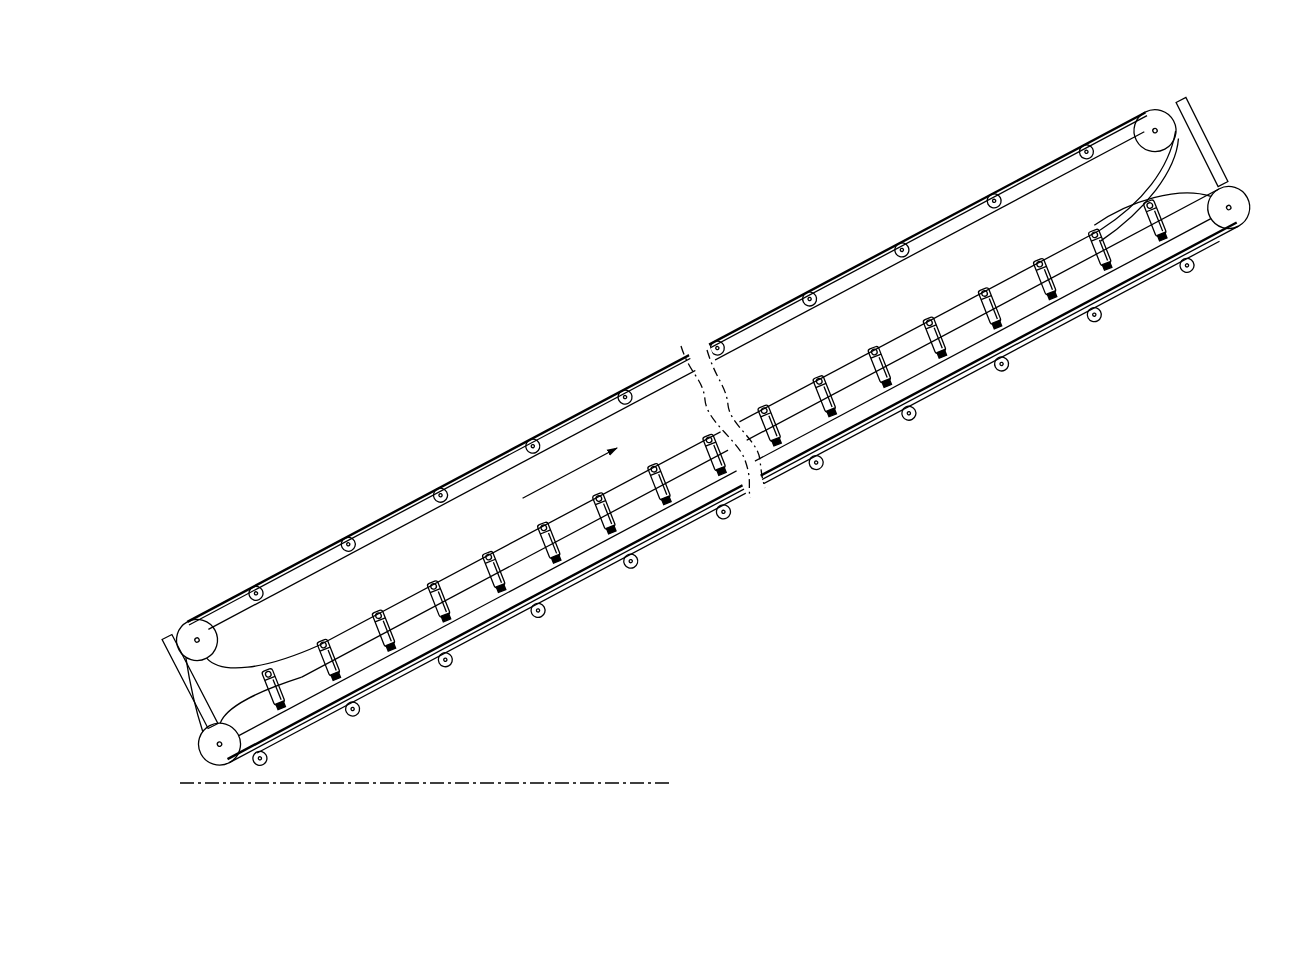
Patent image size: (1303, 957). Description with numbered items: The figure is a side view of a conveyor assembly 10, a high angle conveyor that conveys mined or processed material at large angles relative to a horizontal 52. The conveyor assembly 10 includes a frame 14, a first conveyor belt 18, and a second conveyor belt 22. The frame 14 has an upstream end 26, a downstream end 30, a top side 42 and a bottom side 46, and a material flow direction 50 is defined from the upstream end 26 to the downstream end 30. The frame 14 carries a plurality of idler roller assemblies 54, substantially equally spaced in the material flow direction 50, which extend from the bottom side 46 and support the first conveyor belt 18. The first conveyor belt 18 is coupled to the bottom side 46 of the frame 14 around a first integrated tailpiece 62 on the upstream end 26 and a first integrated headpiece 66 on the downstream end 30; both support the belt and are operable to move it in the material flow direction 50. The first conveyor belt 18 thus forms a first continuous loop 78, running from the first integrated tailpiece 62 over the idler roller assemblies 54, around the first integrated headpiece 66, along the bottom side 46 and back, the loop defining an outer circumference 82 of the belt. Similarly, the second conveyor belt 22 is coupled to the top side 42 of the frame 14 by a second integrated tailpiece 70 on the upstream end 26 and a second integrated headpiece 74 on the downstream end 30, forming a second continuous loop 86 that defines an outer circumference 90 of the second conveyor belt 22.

The conveyor assembly 10 is at (705, 453).
The frame 14 is at (719, 453).
The first conveyor belt 18 is at (725, 500).
The second conveyor belt 22 is at (675, 367).
The upstream end 26 is at (229, 692).
The downstream end 30 is at (1176, 168).
The top side 42 is at (667, 369).
The bottom side 46 is at (733, 495).
The material flow direction 50 is at (572, 468).
The horizontal 52 is at (490, 786).
The idler roller assemblies 54 is at (714, 454).
The first integrated tailpiece 62 is at (219, 744).
The first integrated headpiece 66 is at (1228, 207).
The second integrated tailpiece 70 is at (196, 639).
The second integrated headpiece 74 is at (1155, 130).
The first continuous loop 78 is at (225, 690).
The outer circumference 82 is at (723, 512).
The second continuous loop 86 is at (1178, 150).
The outer circumference 90 is at (510, 455).